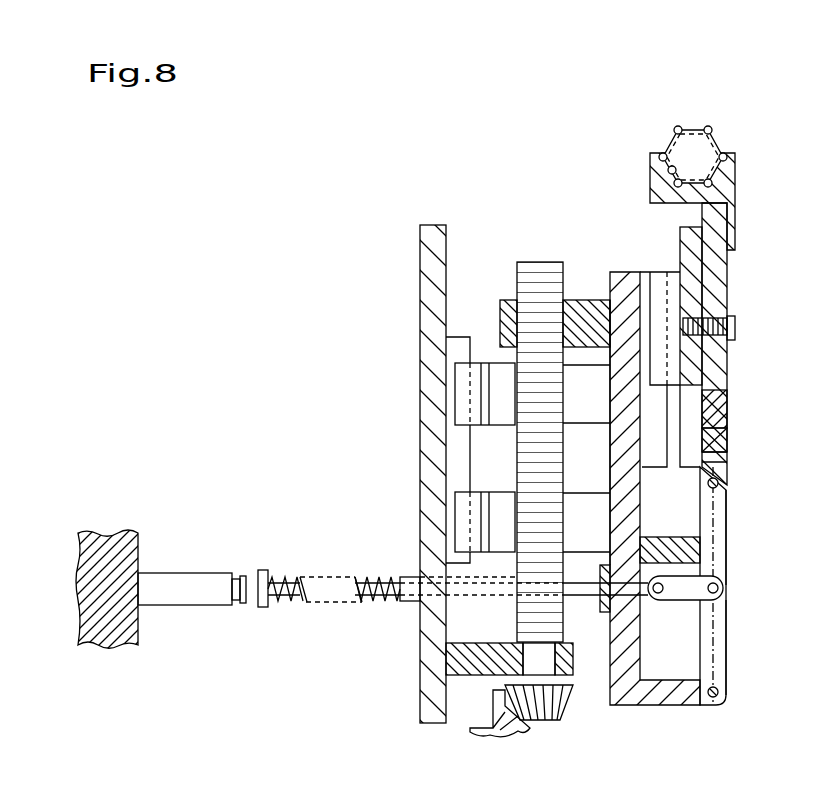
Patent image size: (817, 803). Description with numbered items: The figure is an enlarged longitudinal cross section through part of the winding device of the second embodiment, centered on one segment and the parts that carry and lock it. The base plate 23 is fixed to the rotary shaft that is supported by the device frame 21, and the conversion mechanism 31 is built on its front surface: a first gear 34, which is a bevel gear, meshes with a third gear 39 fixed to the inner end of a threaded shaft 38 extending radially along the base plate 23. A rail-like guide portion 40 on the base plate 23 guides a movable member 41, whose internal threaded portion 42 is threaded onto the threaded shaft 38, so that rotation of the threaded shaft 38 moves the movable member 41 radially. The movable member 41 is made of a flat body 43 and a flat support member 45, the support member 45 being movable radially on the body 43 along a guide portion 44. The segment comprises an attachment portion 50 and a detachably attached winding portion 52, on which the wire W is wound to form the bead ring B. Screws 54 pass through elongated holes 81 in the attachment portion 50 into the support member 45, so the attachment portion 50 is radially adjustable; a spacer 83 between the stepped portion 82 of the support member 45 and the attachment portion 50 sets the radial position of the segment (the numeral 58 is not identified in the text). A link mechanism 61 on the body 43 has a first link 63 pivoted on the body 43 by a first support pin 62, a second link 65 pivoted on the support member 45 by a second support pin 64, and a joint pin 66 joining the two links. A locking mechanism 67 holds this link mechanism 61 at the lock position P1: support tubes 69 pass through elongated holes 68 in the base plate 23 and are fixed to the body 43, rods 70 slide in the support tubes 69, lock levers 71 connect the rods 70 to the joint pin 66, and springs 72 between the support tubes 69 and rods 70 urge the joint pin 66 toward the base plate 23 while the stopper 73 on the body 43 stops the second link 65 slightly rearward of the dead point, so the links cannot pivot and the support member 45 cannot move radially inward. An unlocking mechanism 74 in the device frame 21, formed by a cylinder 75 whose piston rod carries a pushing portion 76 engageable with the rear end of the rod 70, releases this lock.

The device frame 21 is at (138, 555).
The base plate 23 is at (420, 228).
The conversion mechanism 31 is at (527, 262).
The first gear 34 is at (493, 698).
The threaded shaft 38 is at (520, 455).
The third gear 39 is at (570, 700).
The guide portion 40 is at (460, 337).
The movable member 41 is at (612, 210).
The internal threaded portion 42 is at (507, 302).
The body 43 is at (621, 272).
The guide portion 44 is at (650, 403).
The support member 45 is at (680, 232).
The attachment portion 50 is at (727, 268).
The winding portion 52 is at (735, 188).
The screw 54 is at (735, 325).
The nut 58 is at (665, 180).
The link mechanism 61 is at (727, 521).
The first support pin 62 is at (722, 696).
The first link 63 is at (727, 645).
The second support pin 64 is at (720, 486).
The second link 65 is at (727, 553).
The joint pin 66 is at (720, 588).
The locking mechanism 67 is at (323, 577).
The elongated hole 68 is at (440, 648).
The support tube 69 is at (407, 577).
The rod 70 is at (344, 601).
The lock lever 71 is at (677, 600).
The spring 72 is at (292, 608).
The stopper 73 is at (672, 537).
The unlocking mechanism 74 is at (220, 574).
The cylinder 75 is at (205, 605).
The pushing portion 76 is at (243, 604).
The elongated hole 81 is at (712, 395).
The stepped portion 82 is at (727, 450).
The spacer 83 is at (720, 438).
The wire W is at (680, 130).
The bead ring B is at (711, 130).
The lock position P1 is at (713, 625).